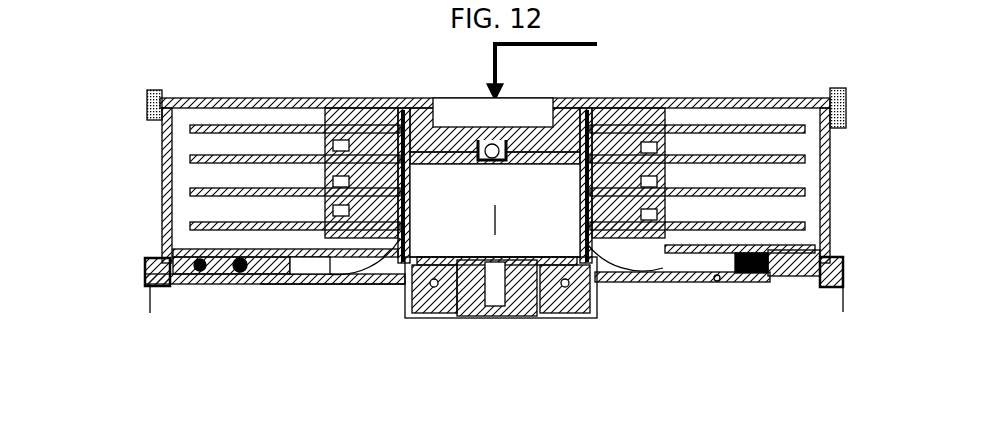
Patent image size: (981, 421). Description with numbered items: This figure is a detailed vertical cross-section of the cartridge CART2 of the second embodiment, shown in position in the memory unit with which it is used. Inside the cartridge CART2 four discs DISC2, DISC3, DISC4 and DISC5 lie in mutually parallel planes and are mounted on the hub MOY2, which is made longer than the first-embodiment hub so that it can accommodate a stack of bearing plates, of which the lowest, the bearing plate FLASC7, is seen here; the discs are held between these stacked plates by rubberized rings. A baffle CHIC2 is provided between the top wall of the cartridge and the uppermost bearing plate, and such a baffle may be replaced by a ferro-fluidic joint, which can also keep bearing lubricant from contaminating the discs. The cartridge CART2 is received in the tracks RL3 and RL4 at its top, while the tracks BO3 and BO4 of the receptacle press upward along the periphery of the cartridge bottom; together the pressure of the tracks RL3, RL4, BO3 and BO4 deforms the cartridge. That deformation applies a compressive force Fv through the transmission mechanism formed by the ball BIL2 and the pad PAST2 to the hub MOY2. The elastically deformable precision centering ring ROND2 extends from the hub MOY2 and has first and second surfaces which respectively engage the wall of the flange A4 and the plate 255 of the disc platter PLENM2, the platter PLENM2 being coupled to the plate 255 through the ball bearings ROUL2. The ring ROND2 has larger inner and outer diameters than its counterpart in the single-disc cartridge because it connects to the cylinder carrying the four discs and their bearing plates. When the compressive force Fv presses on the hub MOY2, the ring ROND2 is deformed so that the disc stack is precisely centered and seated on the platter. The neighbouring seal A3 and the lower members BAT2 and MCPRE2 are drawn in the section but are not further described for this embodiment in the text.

The cartridge CART2 is at (722, 94).
The track RL3 is at (158, 96).
The track RL4 is at (840, 90).
The compressive force Fv is at (494, 62).
The baffle CHIC2 is at (351, 97).
The disc DISC2 is at (203, 126).
The disc DISC3 is at (203, 157).
The disc DISC4 is at (203, 189).
The disc DISC5 is at (203, 220).
The hub MOY2 is at (411, 222).
The pad PAST2 is at (488, 162).
The ball BIL2 is at (494, 164).
The disc platter PLENM2 is at (527, 320).
The ball bearings ROUL2 is at (427, 318).
The bearing plate FLASC7 is at (289, 262).
The frame (bati) BAT2 is at (160, 290).
The seal ring A3 is at (250, 278).
The flange A4 is at (326, 283).
The track BO3 is at (155, 256).
The plate 255 is at (378, 287).
The centering ring ROND2 is at (633, 280).
The pressure member MCPRE2 is at (737, 285).
The track BO4 is at (834, 258).